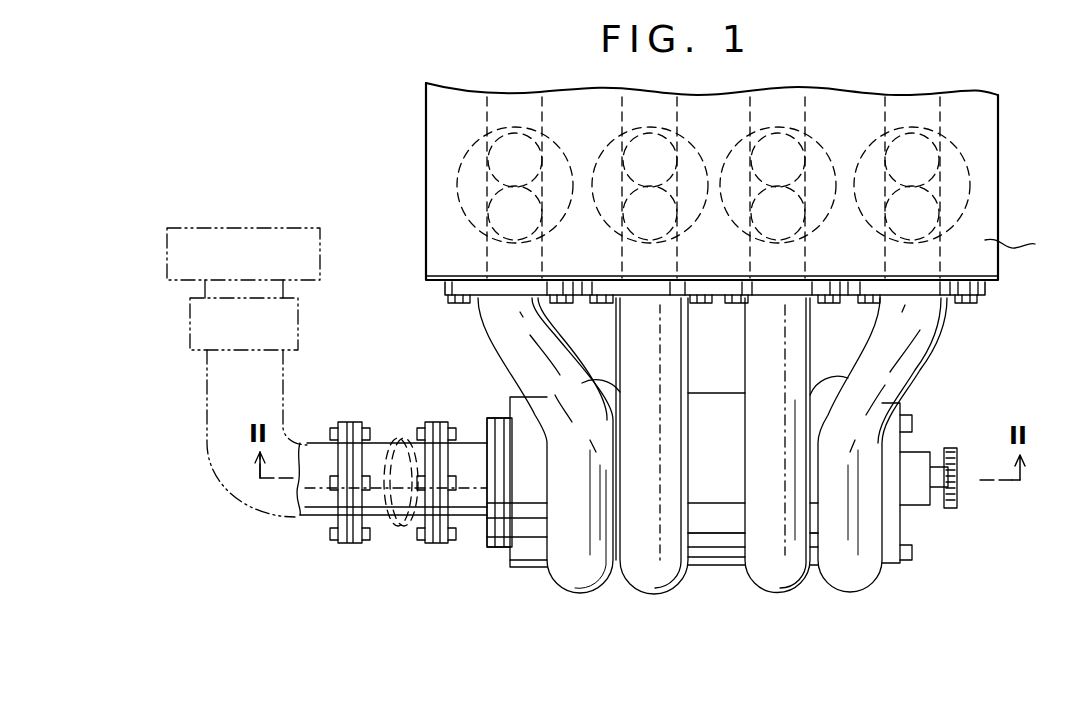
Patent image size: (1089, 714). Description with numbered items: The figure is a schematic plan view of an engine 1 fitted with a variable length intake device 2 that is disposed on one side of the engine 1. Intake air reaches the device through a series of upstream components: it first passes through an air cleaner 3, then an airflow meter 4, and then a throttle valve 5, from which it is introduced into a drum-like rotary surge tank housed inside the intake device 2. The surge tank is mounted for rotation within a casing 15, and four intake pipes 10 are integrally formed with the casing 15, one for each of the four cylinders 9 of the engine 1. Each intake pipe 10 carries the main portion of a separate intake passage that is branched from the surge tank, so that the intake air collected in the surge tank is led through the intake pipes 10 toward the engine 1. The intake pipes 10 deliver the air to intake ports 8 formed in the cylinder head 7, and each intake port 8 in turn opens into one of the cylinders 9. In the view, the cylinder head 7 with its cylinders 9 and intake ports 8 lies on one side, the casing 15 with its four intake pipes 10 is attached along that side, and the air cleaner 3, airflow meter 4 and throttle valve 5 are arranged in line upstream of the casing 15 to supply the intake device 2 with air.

The engine 1 is at (1027, 170).
The variable length intake device 2 is at (491, 606).
The air cleaner 3 is at (176, 260).
The airflow meter 4 is at (195, 326).
The throttle valve 5 is at (413, 503).
The cylinder head 7 is at (1017, 249).
The intake ports 8 is at (486, 262).
The cylinders 9 is at (476, 155).
The intake pipes 10 is at (487, 323).
The casing 15 is at (727, 553).